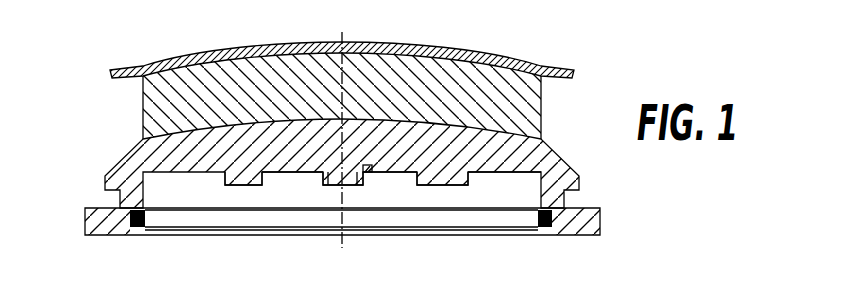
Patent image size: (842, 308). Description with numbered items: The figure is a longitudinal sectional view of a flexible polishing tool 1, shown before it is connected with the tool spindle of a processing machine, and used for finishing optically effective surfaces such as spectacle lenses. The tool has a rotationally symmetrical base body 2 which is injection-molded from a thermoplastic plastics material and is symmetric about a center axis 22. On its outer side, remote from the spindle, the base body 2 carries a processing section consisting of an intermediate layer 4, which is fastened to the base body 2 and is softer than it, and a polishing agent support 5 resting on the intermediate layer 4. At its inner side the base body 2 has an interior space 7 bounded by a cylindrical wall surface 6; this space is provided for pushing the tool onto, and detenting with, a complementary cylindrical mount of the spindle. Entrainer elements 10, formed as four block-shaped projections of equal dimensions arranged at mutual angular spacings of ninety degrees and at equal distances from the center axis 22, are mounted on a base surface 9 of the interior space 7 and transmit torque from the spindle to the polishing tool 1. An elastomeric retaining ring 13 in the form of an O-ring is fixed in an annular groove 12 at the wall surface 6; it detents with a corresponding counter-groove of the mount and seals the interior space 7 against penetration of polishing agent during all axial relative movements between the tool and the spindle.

The polishing tool 1 is at (110, 136).
The base body 2 is at (547, 157).
The intermediate layer 4 is at (530, 96).
The polishing agent support 5 is at (497, 53).
The cylindrical wall surface 6 is at (143, 198).
The interior space 7 is at (293, 196).
The base surface 9 is at (507, 173).
The entrainer elements 10 is at (236, 186).
The annular groove 12 is at (556, 222).
The retaining ring 13 is at (543, 232).
The center axis 22 is at (343, 248).